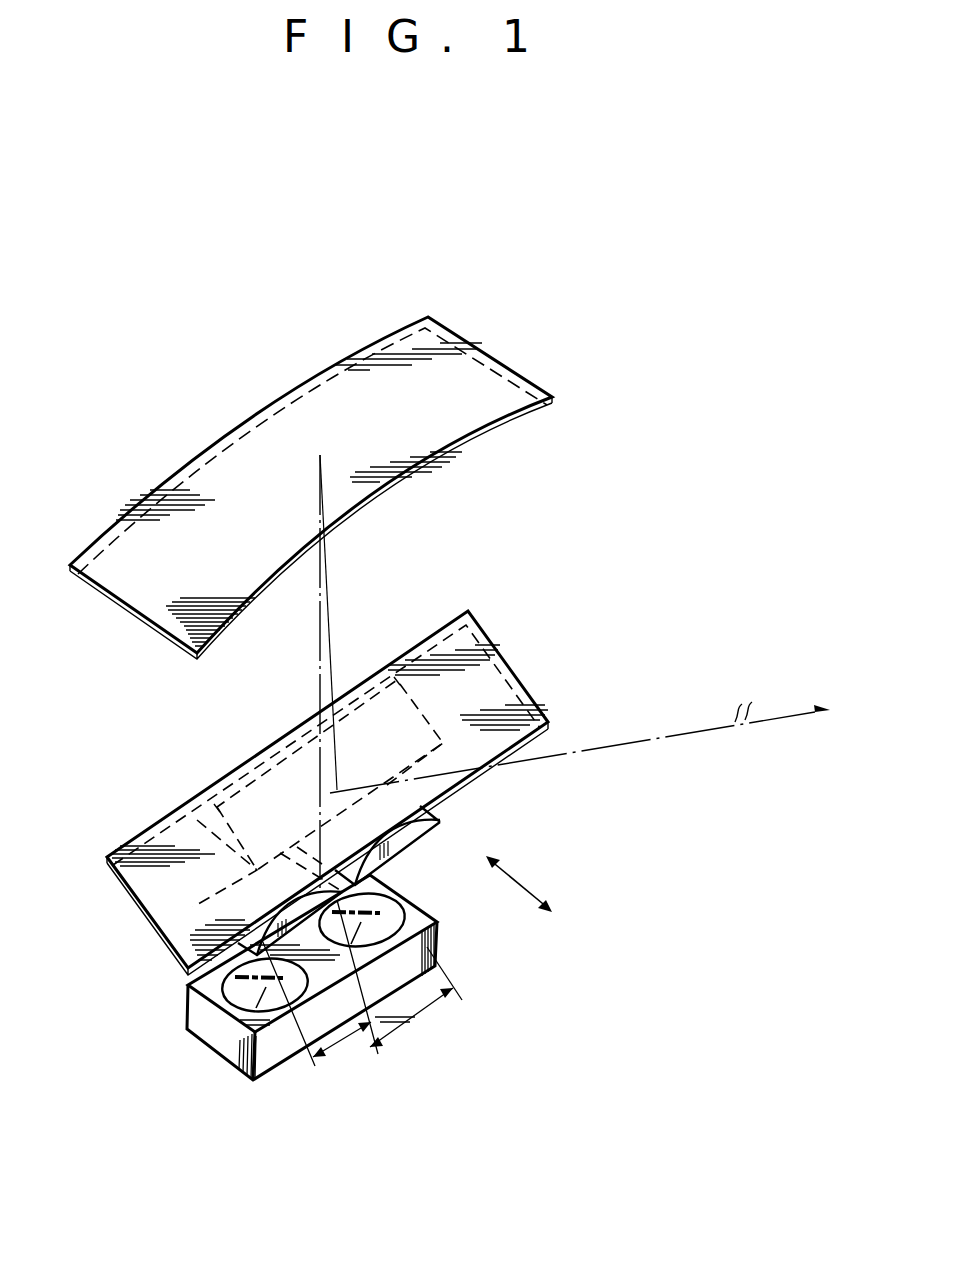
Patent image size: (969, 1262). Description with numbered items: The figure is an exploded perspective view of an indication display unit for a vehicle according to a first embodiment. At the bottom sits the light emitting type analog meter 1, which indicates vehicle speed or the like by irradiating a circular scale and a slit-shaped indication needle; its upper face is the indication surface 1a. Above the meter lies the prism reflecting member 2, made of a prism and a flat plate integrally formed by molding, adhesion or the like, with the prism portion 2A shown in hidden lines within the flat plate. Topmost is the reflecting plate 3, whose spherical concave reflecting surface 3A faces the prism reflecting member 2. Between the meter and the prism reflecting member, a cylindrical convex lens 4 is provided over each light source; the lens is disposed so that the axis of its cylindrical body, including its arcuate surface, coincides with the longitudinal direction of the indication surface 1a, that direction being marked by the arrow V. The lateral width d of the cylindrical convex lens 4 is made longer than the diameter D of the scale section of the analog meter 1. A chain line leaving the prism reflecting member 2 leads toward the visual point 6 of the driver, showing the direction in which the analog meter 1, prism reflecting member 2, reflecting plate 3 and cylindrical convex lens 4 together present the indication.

The light emitting type analog meter 1 is at (440, 933).
The indication surface 1a is at (412, 910).
The prism reflecting member 2 is at (537, 697).
The prism portion of plate lens 2A is at (470, 662).
The reflecting plate 3 is at (548, 385).
The spherical concave reflecting surface 3A is at (500, 415).
The cylindrical convex lens 4 is at (445, 826).
The visual point of the driver 6 is at (834, 705).
The diameter of the scale section D is at (340, 1040).
The lateral width of the cylindrical convex lens d is at (420, 1012).
The arrow indicating longitudinal direction of the indication surface V is at (519, 884).